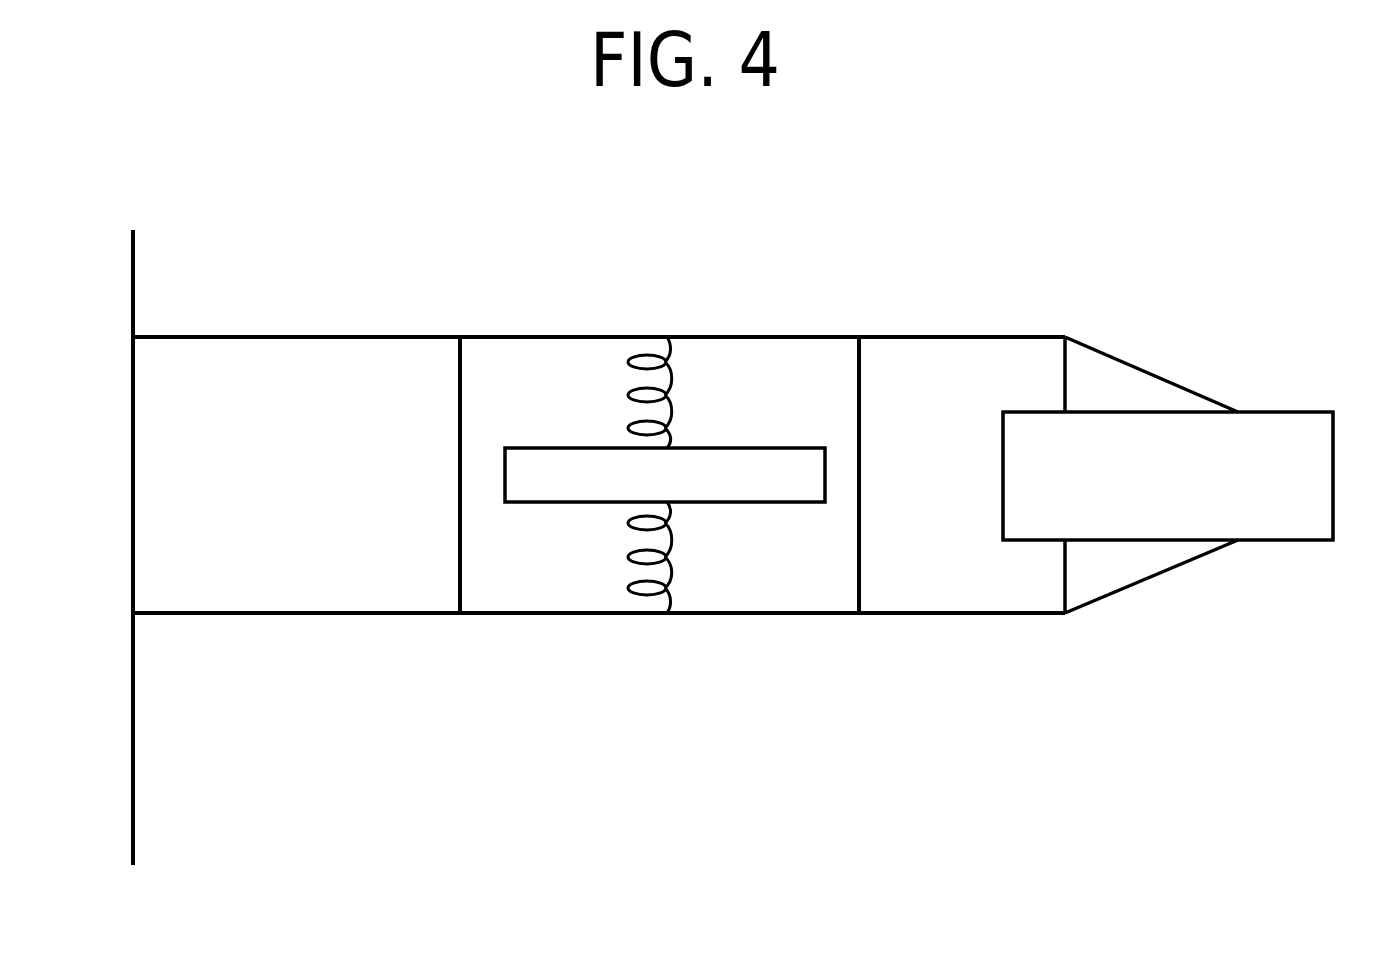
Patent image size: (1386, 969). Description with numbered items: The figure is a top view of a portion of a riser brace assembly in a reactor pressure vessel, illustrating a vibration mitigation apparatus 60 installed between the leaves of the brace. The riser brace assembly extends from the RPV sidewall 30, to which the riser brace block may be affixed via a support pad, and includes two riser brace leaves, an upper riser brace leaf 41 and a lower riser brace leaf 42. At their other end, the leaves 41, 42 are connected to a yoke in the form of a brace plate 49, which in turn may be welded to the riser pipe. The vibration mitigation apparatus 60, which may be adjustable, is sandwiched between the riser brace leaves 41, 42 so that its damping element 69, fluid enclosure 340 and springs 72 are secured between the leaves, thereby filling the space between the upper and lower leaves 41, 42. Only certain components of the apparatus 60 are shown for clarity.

The RPV sidewall 30 is at (133, 264).
The upper riser brace leaf 41 is at (383, 337).
The lower riser brace leaf 42 is at (393, 613).
The fluid enclosure 340 is at (778, 575).
The vibration mitigation apparatus 60 is at (859, 383).
The damping element 69 is at (560, 508).
The springs 72 is at (668, 350).
The brace plate 49 is at (1297, 410).